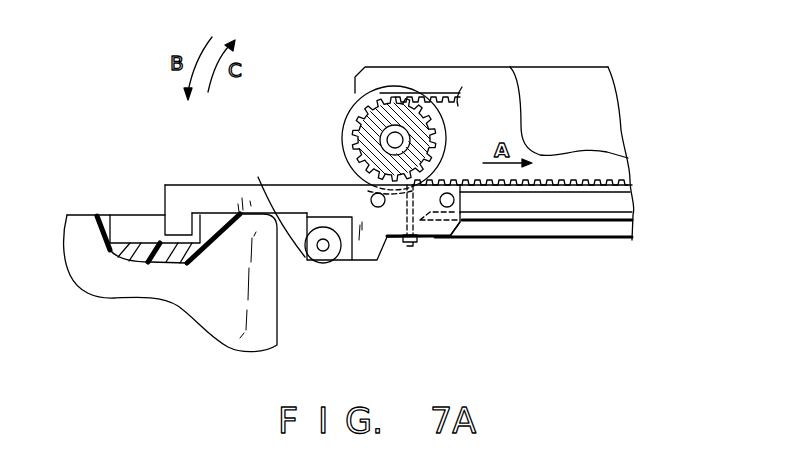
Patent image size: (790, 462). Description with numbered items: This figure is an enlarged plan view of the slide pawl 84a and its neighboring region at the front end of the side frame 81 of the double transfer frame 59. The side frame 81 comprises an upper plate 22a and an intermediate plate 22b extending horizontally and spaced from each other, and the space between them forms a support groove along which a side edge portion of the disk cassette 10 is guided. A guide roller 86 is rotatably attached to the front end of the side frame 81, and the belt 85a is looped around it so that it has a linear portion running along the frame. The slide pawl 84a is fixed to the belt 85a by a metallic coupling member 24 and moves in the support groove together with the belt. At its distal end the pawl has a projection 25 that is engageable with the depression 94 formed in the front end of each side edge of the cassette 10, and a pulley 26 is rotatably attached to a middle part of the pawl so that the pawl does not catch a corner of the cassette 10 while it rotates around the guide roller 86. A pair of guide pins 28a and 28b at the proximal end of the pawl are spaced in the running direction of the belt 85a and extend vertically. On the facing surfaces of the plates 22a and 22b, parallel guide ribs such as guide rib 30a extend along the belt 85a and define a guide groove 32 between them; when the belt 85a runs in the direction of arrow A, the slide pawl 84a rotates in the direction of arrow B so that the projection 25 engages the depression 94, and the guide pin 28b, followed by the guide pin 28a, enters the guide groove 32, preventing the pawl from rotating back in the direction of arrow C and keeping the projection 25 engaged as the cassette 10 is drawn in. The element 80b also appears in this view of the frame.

The disk cassette 10 is at (76, 220).
The depression 94 is at (115, 228).
The projection 25 is at (177, 210).
The slide pawl 84a is at (231, 190).
The pulley 26 is at (324, 258).
The guide pin 28a is at (372, 197).
The guide pin 28b is at (453, 204).
The metallic coupling member 24 is at (410, 246).
The guide roller 86 is at (367, 122).
The side frame 81 is at (455, 60).
The double transfer frame 59 is at (542, 63).
The upper plate 22a is at (603, 88).
The belt 85a is at (628, 168).
The guide rail 80b is at (632, 207).
The guide rib 30a is at (530, 217).
The guide groove 32 is at (567, 207).
The intermediate plate 22b is at (618, 238).